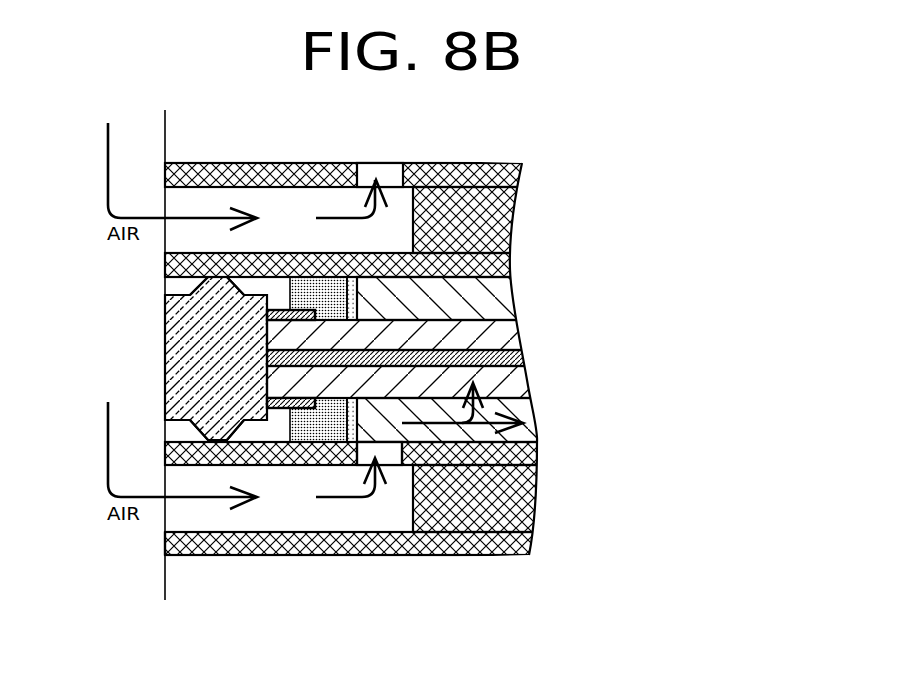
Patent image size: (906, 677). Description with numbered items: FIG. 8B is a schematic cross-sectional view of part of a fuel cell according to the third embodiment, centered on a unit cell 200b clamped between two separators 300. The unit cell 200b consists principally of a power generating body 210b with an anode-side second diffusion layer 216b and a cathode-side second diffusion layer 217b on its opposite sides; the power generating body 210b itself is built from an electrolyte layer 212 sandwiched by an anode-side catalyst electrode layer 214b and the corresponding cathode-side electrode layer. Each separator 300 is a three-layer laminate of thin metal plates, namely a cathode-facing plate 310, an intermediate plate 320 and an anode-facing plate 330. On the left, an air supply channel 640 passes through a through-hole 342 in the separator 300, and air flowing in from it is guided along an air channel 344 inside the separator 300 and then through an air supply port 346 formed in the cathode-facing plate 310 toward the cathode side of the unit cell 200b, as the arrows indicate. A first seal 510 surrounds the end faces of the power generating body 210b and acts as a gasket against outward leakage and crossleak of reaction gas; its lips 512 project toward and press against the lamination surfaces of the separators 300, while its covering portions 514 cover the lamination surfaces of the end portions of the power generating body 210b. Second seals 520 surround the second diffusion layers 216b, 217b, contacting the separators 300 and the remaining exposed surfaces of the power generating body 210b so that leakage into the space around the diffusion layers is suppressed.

The unit cell 200b is at (739, 262).
The power generating body 210b is at (662, 288).
The electrolyte layer 212 is at (524, 357).
The anode-side catalyst electrode layer 214b is at (514, 333).
The anode-side second diffusion layer 216b is at (513, 287).
The cathode-side second diffusion layer 217b is at (533, 393).
The separator 300 is at (657, 172).
The cathode-facing plate 310 is at (515, 175).
The intermediate plate 320 is at (513, 220).
The anode-facing plate 330 is at (513, 263).
The through-hole 342 is at (165, 542).
The air channel 344 is at (300, 507).
The air supply port 346 is at (400, 444).
The first seal 510 is at (165, 327).
The lip 512 is at (197, 282).
The covering portion 514 is at (273, 308).
The second seal 520 is at (320, 292).
The air supply channel 640 is at (165, 580).